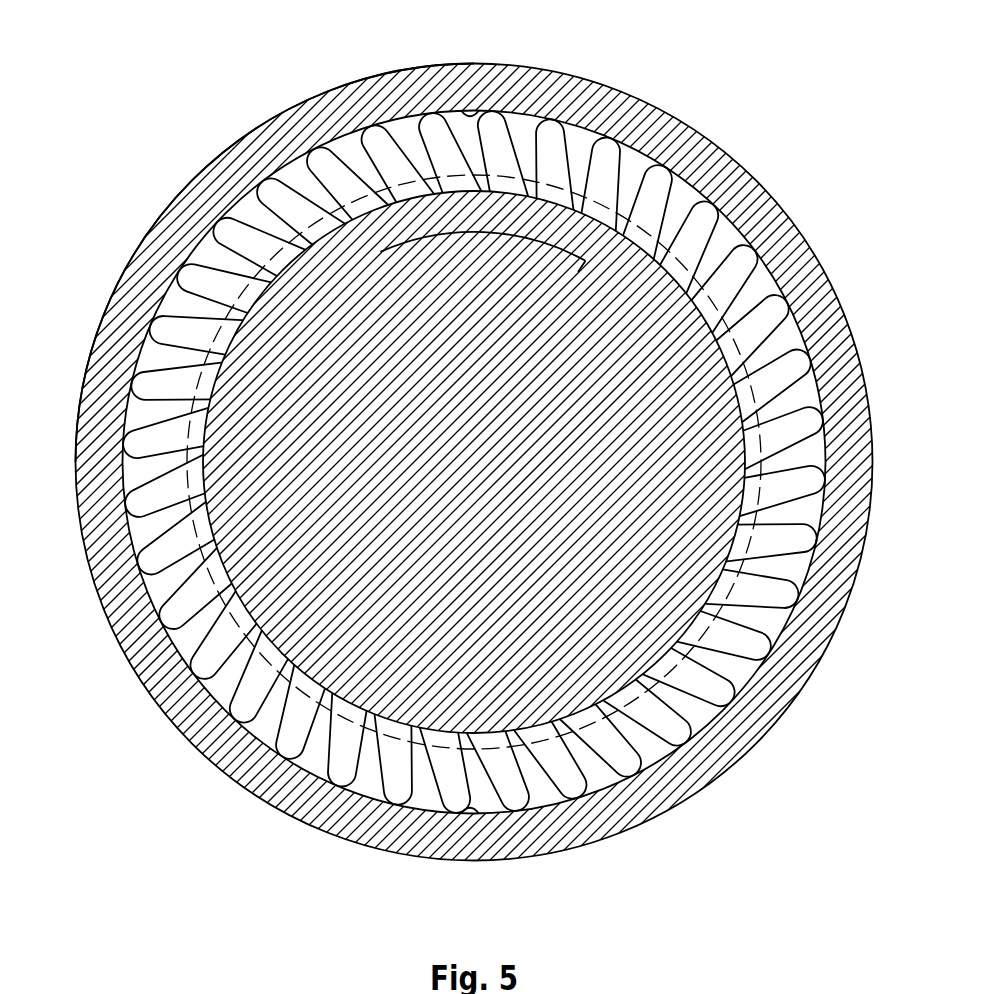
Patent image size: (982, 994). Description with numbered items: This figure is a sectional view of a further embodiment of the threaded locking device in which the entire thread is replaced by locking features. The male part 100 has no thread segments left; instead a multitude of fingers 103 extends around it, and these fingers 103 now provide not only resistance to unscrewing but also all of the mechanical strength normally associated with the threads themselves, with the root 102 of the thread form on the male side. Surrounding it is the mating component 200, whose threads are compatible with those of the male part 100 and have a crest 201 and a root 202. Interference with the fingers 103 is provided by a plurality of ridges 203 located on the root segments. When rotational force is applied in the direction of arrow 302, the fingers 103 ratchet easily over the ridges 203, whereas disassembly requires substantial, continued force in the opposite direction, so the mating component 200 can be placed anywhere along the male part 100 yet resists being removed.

The male component 100 is at (688, 656).
The root 102 is at (552, 820).
The fingers 103 is at (340, 776).
The mating component 200 is at (205, 743).
The crest 201 is at (160, 676).
The root 202 is at (160, 604).
The ridges 203 is at (473, 112).
The arrow 302 is at (452, 233).